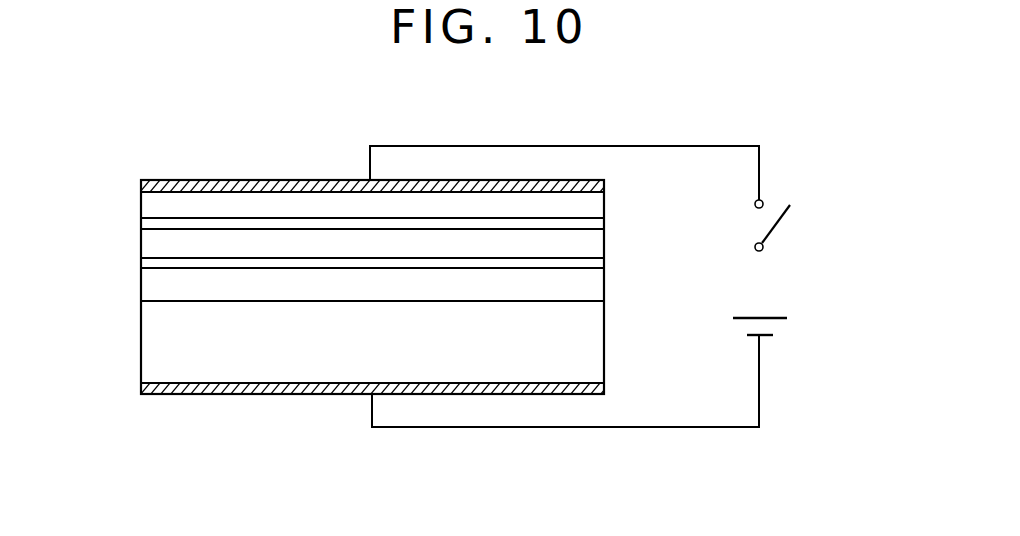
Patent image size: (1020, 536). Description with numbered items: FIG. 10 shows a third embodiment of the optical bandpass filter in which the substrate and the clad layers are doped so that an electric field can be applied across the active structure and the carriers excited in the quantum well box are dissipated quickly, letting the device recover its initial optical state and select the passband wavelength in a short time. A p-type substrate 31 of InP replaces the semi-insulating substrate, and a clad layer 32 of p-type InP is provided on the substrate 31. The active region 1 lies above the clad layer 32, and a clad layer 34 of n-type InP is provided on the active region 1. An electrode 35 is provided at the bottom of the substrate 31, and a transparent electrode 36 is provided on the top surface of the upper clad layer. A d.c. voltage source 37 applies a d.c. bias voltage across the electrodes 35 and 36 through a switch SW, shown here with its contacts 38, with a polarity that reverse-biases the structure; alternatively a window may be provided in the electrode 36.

The transparent electrode 36 is at (141, 182).
The electrode 35 is at (159, 395).
The clad layer of n-type InP 34 is at (591, 201).
The active region 1 is at (612, 210).
The clad layer of p-type InP 32 is at (592, 289).
The p-type substrate 31 is at (592, 348).
The switch 38 is at (767, 198).
The d.c. voltage source 37 is at (781, 327).